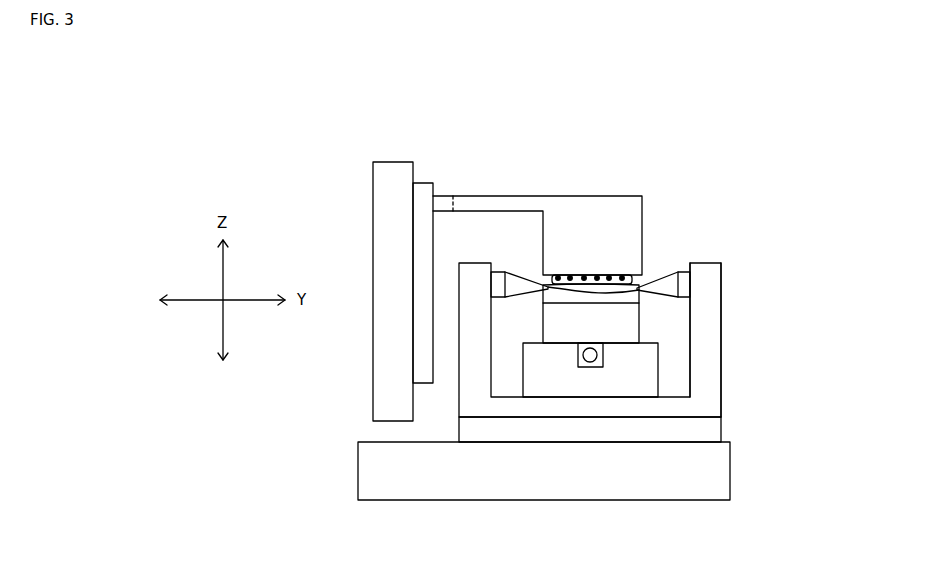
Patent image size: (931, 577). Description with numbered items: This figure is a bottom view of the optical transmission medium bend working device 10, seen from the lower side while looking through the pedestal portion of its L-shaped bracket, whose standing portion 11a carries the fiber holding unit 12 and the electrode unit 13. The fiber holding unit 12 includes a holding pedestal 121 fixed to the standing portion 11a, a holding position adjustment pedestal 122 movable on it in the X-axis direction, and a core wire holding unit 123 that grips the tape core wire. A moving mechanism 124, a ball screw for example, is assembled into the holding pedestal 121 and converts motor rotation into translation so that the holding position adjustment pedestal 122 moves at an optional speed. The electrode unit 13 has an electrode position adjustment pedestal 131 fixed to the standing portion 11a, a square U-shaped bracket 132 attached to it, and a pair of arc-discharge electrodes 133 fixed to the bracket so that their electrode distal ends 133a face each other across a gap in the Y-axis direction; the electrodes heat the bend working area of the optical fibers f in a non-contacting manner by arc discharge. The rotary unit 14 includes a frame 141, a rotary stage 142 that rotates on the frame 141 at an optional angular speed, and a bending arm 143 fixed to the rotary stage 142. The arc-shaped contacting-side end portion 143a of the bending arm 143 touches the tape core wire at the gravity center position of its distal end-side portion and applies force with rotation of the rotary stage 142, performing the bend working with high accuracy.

The optical transmission medium bend working device 10 is at (700, 168).
The standing portion 11a is at (606, 480).
The fiber holding unit 12 is at (551, 380).
The holding pedestal 121 is at (630, 380).
The holding position adjustment pedestal 122 is at (553, 334).
The core wire holding unit 123 is at (553, 293).
The moving mechanism 124 is at (578, 366).
The electrode unit 13 is at (718, 256).
The electrode position adjustment pedestal 131 is at (710, 428).
The square U-shaped bracket 132 is at (708, 363).
The arc-discharge electrodes 133 is at (515, 272).
The electrode distal ends 133a is at (637, 289).
The rotary unit 14 is at (369, 259).
The frame 141 is at (388, 178).
The rotary stage 142 is at (426, 190).
The bending arm 143 is at (580, 218).
The contacting-side end portion 143a is at (628, 272).
The optical fibers f is at (558, 275).